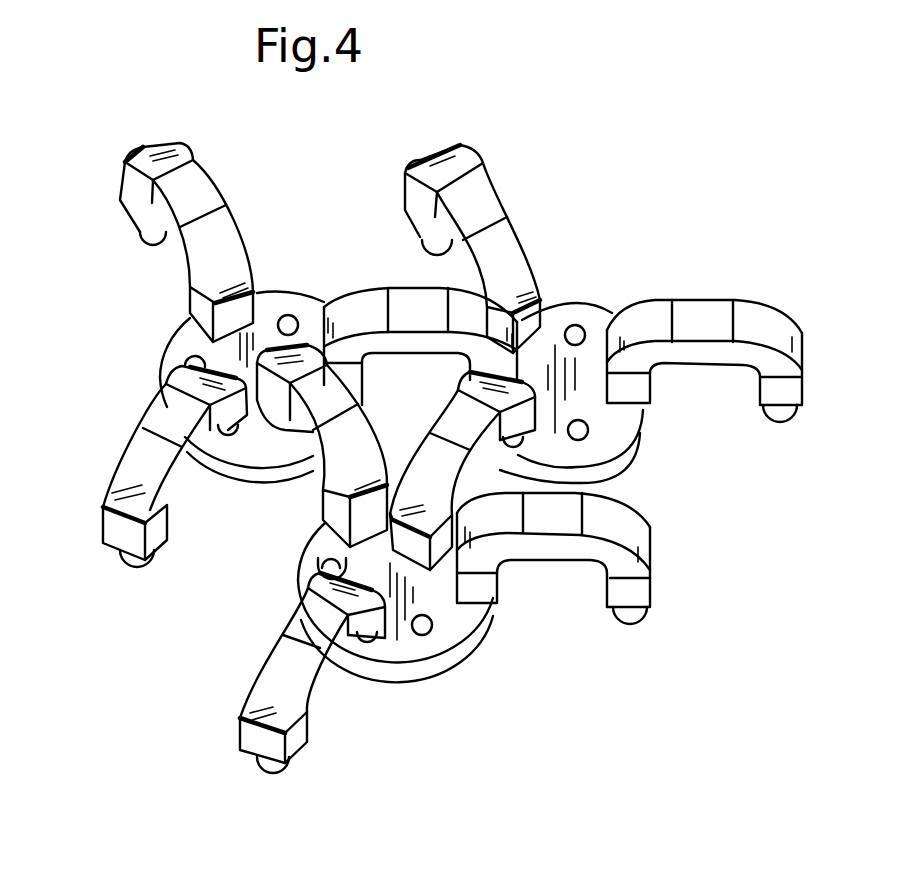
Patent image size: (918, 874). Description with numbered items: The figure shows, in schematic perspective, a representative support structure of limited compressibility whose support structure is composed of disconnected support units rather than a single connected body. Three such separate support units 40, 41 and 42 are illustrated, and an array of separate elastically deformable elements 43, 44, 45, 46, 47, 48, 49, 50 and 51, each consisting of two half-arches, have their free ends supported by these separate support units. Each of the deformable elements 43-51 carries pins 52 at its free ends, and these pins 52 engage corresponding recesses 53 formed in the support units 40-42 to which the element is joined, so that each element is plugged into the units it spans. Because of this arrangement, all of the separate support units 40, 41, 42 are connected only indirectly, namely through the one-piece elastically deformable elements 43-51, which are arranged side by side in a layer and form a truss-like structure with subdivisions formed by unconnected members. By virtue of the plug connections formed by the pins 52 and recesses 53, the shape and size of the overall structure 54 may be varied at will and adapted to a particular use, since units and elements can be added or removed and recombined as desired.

The support unit 40 is at (497, 640).
The support unit 41 is at (627, 422).
The support unit 42 is at (233, 465).
The elastically deformable element 43 is at (307, 683).
The elastically deformable element 44 is at (325, 481).
The elastically deformable element 45 is at (627, 533).
The elastically deformable element 46 is at (523, 480).
The elastically deformable element 47 is at (480, 165).
The elastically deformable element 48 is at (765, 322).
The elastically deformable element 49 is at (123, 451).
The elastically deformable element 50 is at (150, 148).
The elastically deformable element 51 is at (366, 292).
The pin 52 is at (288, 780).
The recess 53 is at (426, 636).
The overall structure 54 is at (587, 252).